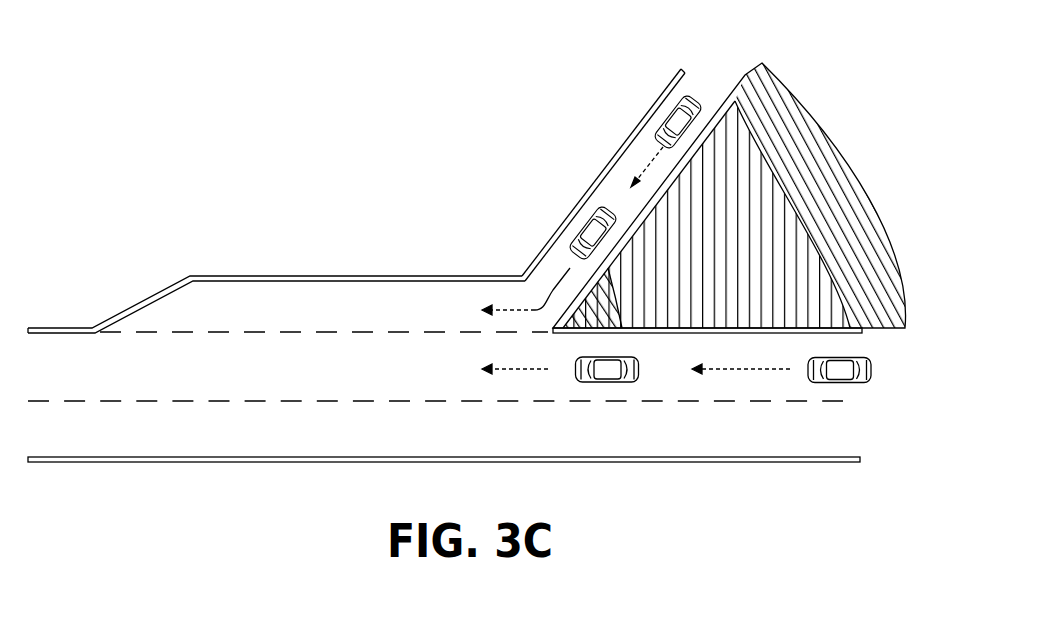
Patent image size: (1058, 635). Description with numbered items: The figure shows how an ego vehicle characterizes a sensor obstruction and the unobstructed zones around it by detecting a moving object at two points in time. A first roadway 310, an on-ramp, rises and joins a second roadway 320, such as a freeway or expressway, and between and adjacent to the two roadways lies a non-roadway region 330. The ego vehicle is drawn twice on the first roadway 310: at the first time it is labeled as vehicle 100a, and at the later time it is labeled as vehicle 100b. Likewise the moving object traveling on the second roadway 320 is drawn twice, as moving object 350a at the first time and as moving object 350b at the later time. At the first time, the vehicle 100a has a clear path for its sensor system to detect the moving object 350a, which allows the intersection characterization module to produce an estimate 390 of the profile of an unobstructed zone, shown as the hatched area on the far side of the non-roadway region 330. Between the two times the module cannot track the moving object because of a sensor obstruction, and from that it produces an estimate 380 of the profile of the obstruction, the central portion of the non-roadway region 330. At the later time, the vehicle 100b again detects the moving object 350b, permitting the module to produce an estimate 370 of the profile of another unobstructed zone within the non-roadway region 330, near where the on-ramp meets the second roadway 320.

The vehicle at time T0 100a is at (672, 113).
The vehicle at time T1 100b is at (590, 226).
The first roadway 310 is at (642, 167).
The second roadway 320 is at (185, 437).
The non-roadway region 330 is at (800, 93).
The moving object at time T0 350a is at (852, 372).
The moving object at time T1 350b is at (612, 370).
The estimate of the profile of another unobstructed zone 370 is at (551, 283).
The estimate of the profile of the sensor obstruction 380 is at (823, 305).
The estimate of the profile of an unobstructed zone 390 is at (852, 198).